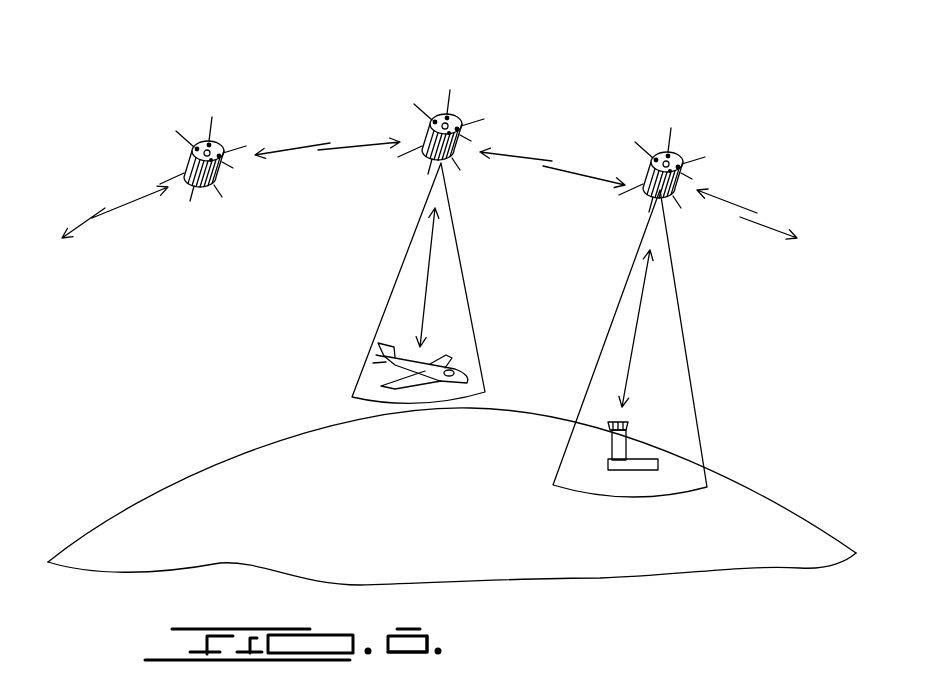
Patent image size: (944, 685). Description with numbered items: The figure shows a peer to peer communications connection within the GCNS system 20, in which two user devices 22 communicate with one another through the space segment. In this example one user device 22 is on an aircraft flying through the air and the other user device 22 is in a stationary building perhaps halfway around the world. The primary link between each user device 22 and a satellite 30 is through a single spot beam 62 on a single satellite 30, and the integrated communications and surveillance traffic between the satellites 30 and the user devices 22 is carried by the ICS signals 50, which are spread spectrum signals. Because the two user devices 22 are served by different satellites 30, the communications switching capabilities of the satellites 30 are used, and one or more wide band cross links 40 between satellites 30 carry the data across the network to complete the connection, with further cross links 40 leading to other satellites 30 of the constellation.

The GCNS system 20 is at (590, 71).
The satellite 30 is at (196, 142).
The cross link 40 is at (311, 144).
The ICS signal 50 is at (427, 278).
The spot beam 62 is at (456, 234).
The user device 22 is at (462, 372).